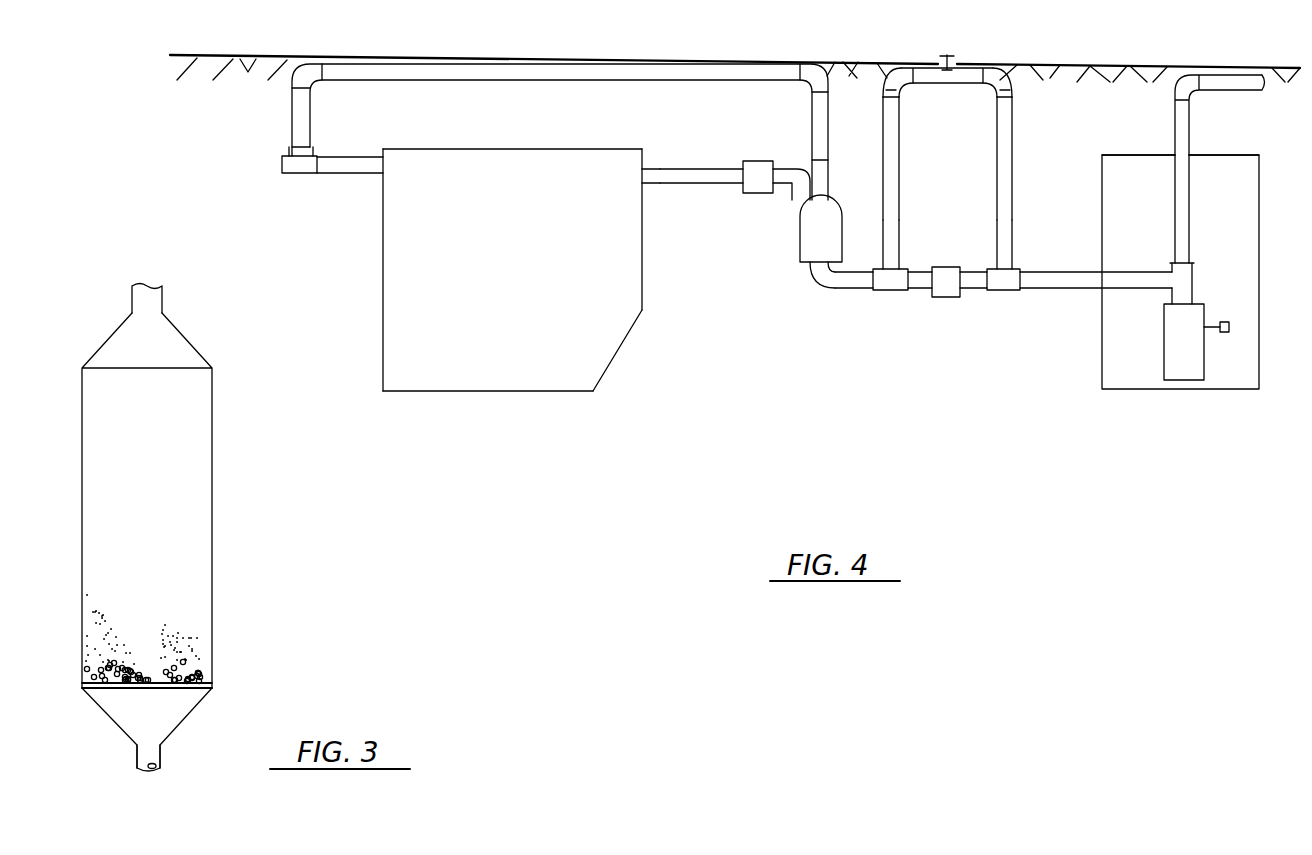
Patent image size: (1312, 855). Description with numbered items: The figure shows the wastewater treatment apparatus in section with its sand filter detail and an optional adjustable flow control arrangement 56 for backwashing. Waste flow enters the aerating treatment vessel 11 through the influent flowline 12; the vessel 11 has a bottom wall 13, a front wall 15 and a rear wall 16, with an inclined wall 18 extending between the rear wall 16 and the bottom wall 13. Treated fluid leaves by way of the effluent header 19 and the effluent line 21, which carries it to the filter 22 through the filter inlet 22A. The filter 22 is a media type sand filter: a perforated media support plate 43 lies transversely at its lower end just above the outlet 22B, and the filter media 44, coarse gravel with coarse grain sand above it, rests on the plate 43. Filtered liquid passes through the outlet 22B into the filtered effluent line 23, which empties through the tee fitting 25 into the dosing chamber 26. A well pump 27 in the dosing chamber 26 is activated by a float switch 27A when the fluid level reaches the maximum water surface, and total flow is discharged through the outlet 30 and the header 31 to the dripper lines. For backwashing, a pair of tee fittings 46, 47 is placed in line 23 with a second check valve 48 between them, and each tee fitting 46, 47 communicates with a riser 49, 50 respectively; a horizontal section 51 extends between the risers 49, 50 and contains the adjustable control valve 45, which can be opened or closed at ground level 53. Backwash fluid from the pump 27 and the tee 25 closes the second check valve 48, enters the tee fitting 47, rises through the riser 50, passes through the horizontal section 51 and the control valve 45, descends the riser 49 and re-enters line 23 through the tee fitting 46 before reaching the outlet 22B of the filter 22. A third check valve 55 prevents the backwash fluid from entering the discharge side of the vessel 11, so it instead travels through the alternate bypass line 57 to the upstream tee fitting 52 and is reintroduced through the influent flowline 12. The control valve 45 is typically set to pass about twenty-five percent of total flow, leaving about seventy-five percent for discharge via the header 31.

In FIG. 4, the aerating treatment vessel 11 is at (520, 300).
In FIG. 4, the influent flowline 12 is at (370, 175).
In FIG. 4, the bottom wall 13 is at (483, 393).
In FIG. 4, the front wall 15 is at (382, 260).
In FIG. 4, the rear wall 16 is at (648, 282).
In FIG. 4, the inclined wall 18 is at (612, 362).
In FIG. 4, the effluent header 19 is at (652, 185).
In FIG. 4, the effluent line 21 is at (706, 172).
In FIG. 4, the filter 22 is at (812, 242).
In FIG. 3, the filter 22 is at (161, 530).
In FIG. 3, the filter inlet 22A is at (136, 302).
In FIG. 3, the filter outlet 22B is at (140, 768).
In FIG. 4, the filtered effluent line 23 is at (822, 275).
In FIG. 4, the tee fitting 25 is at (1180, 283).
In FIG. 4, the dosing chamber 26 is at (1232, 390).
In FIG. 4, the pump 27 is at (1188, 350).
In FIG. 4, the float switch 27A is at (1232, 323).
In FIG. 4, the outlet 30 is at (1195, 155).
In FIG. 4, the header 31 is at (1182, 73).
In FIG. 3, the media support plate 43 is at (215, 686).
In FIG. 3, the filter media 44 is at (98, 672).
In FIG. 4, the adjustable control valve 45 is at (965, 201).
In FIG. 4, the tee fitting 46 is at (887, 282).
In FIG. 4, the tee fitting 47 is at (1025, 291).
In FIG. 4, the second check valve 48 is at (955, 275).
In FIG. 4, the riser 49 is at (892, 203).
In FIG. 4, the riser 50 is at (998, 158).
In FIG. 4, the horizontal section 51 is at (898, 88).
In FIG. 4, the tee fitting 52 is at (289, 158).
In FIG. 4, the ground level 53 is at (212, 52).
In FIG. 4, the third check valve 55 is at (757, 168).
In FIG. 4, the adjustable flow control arrangement 56 is at (918, 78).
In FIG. 4, the alternate bypass line 57 is at (430, 80).